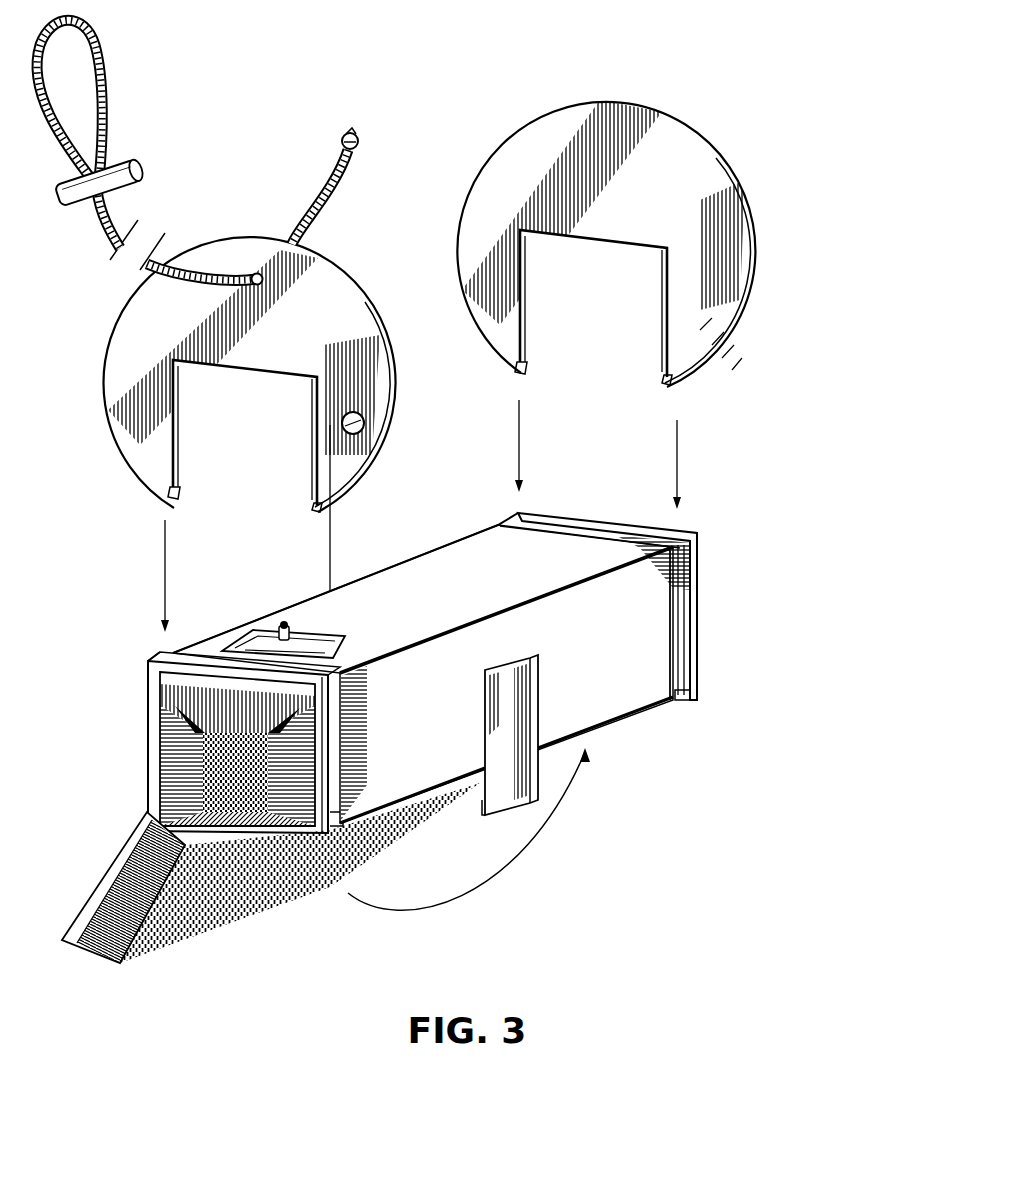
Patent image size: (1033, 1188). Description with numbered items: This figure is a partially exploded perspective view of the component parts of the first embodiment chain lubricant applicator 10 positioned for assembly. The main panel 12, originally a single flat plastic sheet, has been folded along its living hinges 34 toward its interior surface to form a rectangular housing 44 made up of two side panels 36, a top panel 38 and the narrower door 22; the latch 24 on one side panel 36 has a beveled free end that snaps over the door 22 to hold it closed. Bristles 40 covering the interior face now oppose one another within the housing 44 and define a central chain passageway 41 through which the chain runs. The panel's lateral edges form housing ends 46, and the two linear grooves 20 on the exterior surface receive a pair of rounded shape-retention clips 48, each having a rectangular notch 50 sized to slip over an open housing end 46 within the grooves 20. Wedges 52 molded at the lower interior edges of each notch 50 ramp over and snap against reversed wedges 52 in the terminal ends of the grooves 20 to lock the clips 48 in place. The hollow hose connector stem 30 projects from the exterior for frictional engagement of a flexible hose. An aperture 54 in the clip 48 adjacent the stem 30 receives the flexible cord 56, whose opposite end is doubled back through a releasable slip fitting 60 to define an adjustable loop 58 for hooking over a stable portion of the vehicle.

The chain lubricant applicator 10 is at (318, 945).
The main panel 12 is at (488, 548).
The linear grooves 20 is at (337, 652).
The door 22 is at (64, 944).
The latch 24 is at (498, 815).
The hose connector stem 30 is at (282, 623).
The living hinges 34 is at (627, 557).
The side panels 36 is at (158, 738).
The top panel 38 is at (440, 563).
The bristles 40 is at (155, 775).
The central chain passageway 41 is at (150, 660).
The rectangular housing 44 is at (603, 738).
The housing ends 46 is at (150, 680).
The shape-retention clips 48 is at (340, 272).
The rectangular notch 50 is at (235, 448).
The wedge 52 is at (300, 500).
The aperture 54 is at (350, 421).
The cord 56 is at (118, 212).
The loop 58 is at (97, 46).
The releasable slip fitting 60 is at (137, 150).